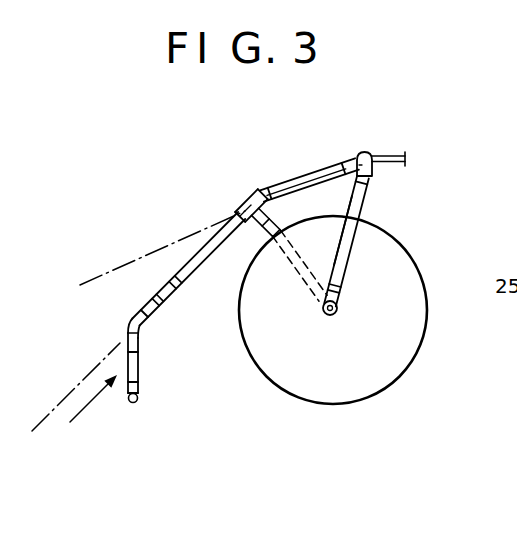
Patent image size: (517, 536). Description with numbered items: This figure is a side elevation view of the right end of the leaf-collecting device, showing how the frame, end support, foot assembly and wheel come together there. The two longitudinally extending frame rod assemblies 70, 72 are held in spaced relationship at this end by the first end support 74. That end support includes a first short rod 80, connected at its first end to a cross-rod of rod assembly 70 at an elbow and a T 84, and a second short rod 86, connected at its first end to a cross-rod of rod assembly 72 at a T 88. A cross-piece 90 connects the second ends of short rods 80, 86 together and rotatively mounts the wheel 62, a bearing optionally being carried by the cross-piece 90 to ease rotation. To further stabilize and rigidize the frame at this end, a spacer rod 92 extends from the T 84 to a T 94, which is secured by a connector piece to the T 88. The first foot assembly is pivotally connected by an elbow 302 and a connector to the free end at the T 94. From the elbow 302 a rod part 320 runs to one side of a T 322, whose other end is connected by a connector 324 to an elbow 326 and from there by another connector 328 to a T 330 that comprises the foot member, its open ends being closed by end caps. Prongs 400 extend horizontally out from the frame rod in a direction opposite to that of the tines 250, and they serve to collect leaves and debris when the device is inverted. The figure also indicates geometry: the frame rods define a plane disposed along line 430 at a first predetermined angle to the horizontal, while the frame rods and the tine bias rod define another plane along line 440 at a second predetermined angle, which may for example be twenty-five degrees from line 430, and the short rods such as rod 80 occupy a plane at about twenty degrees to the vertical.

The wheel 62 is at (383, 365).
The cross-piece 90 is at (338, 311).
The first end support 74 is at (378, 197).
The first short rod 80 is at (362, 208).
The frame rod assembly 70 is at (368, 140).
The prong 400 is at (395, 152).
The T 94 is at (274, 184).
The spacer rod 92 is at (311, 184).
The T 84 is at (355, 158).
The frame rod assembly 72 is at (249, 186).
The elbow 302 is at (240, 211).
The T 88 is at (251, 224).
The second short rod 86 is at (292, 251).
The rod part 320 is at (205, 265).
The T 322 is at (176, 283).
The connector 324 is at (151, 307).
The tines 250 is at (148, 328).
The elbow 326 is at (140, 349).
The connector 328 is at (128, 362).
The T 330 is at (133, 415).
The line 430 is at (120, 254).
The line 440 is at (49, 400).